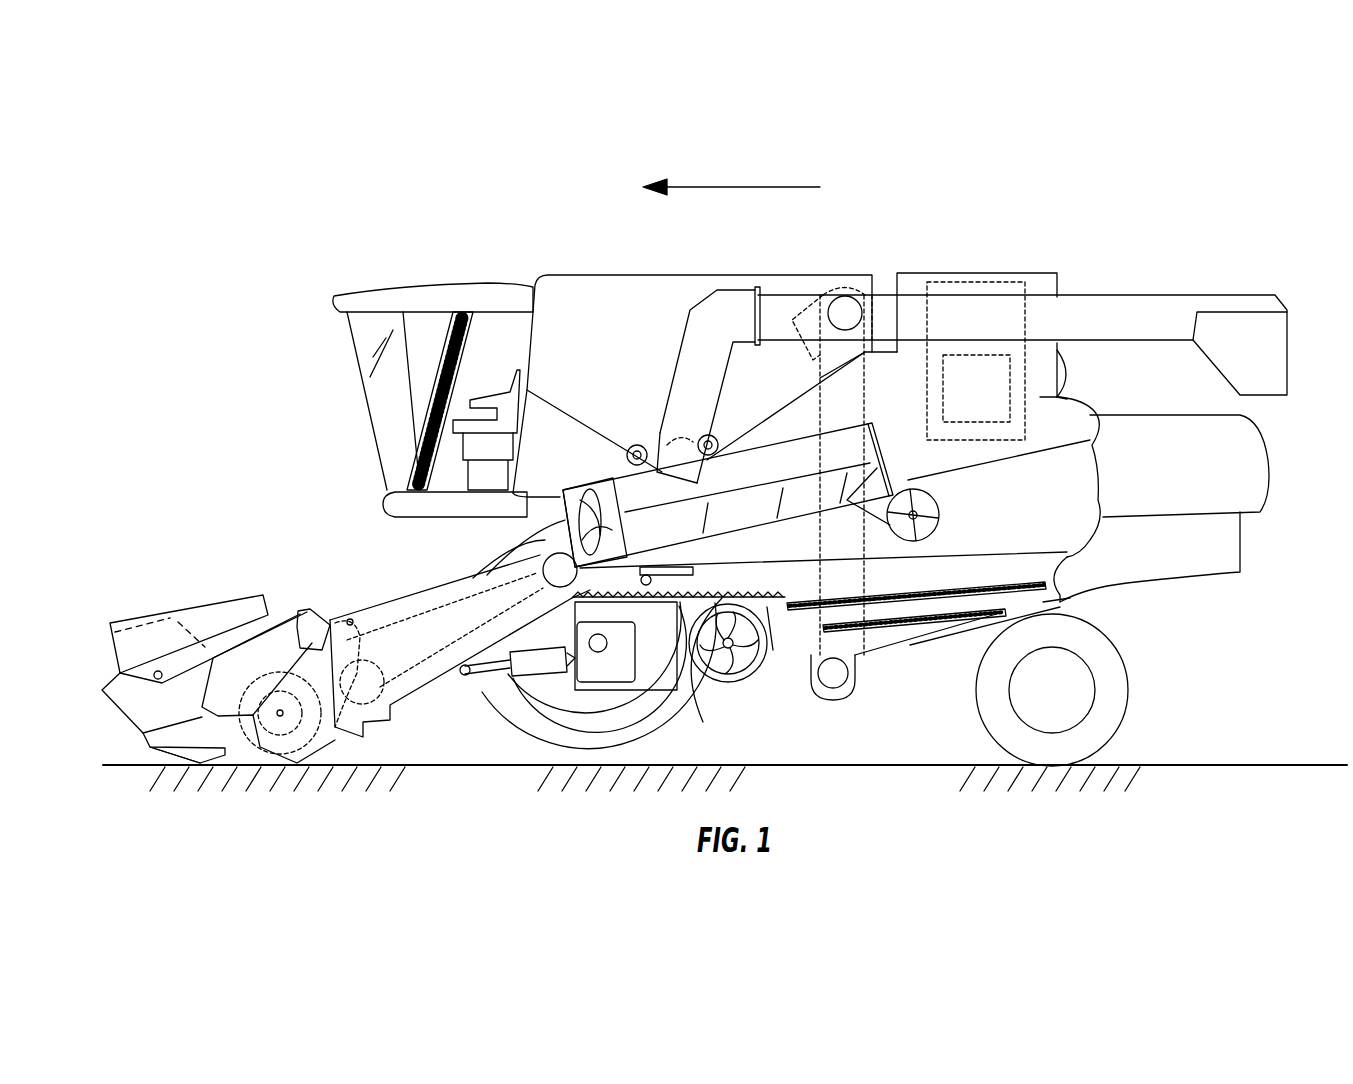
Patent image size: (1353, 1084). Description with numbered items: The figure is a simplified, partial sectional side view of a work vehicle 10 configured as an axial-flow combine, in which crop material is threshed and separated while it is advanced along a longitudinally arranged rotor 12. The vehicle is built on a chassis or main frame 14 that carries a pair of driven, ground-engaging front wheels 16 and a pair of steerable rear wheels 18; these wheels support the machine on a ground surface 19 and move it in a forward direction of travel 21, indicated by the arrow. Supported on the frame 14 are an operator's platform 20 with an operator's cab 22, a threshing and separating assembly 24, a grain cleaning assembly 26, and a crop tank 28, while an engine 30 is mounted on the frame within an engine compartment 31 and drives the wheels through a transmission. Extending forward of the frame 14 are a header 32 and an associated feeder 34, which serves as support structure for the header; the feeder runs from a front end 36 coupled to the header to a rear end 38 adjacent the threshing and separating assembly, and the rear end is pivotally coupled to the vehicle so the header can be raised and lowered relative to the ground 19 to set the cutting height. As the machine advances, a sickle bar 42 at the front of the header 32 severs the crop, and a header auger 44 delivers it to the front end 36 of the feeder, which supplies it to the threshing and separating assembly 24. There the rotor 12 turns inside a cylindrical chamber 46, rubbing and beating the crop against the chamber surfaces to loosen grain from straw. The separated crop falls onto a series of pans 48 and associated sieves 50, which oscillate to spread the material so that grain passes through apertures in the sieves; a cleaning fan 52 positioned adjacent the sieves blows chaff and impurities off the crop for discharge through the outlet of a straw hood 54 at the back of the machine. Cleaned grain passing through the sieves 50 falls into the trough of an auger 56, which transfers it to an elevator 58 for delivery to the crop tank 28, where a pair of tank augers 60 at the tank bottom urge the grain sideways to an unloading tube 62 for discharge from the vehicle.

The work vehicle 10 is at (392, 240).
The rotor 12 is at (593, 503).
The main frame 14 is at (1070, 598).
The front wheels 16 is at (537, 732).
The rear wheels 18 is at (1123, 700).
The ground surface 19 is at (128, 766).
The operator's platform 20 is at (397, 507).
The forward direction of travel 21 is at (753, 184).
The operator's cab 22 is at (378, 393).
The threshing and separating assembly 24 is at (728, 487).
The grain cleaning assembly 26 is at (800, 683).
The crop tank 28 is at (630, 273).
The engine 30 is at (967, 422).
The engine compartment 31 is at (1003, 440).
The header 32 is at (218, 679).
The feeder 34 is at (368, 594).
The front end 36 is at (272, 647).
The rear end 38 is at (540, 542).
The sickle bar 42 is at (155, 750).
The header auger 44 is at (297, 740).
The cylindrical chamber 46 is at (773, 457).
The pans 48 is at (752, 573).
The sieves 50 is at (868, 596).
The cleaning fan 52 is at (723, 687).
The straw hood 54 is at (1258, 480).
The auger 56 is at (837, 683).
The elevator 58 is at (867, 380).
The tank augers 60 is at (638, 442).
The unloading tube 62 is at (1118, 312).